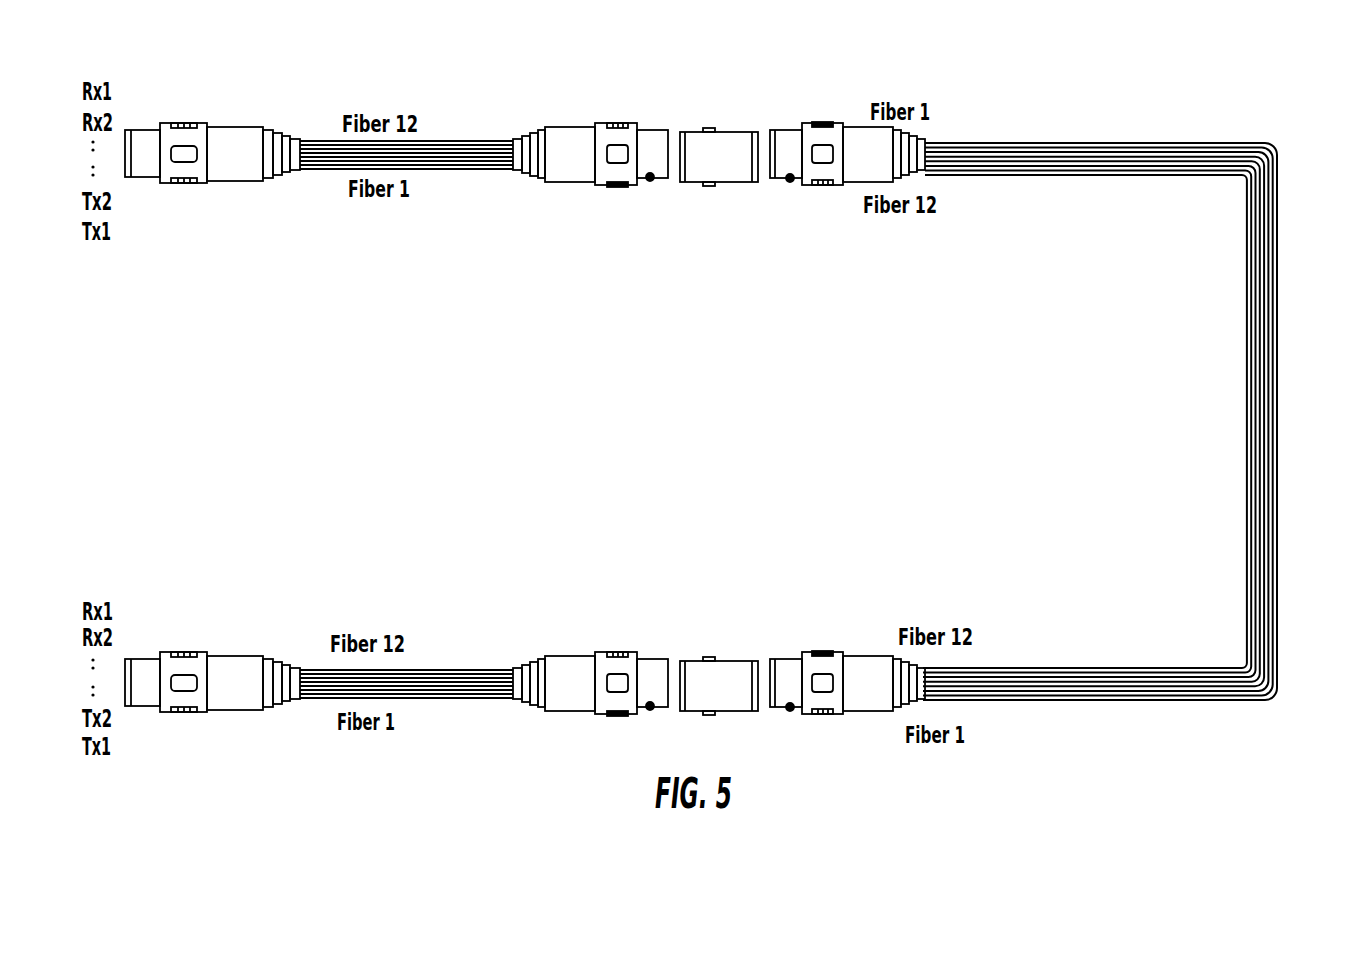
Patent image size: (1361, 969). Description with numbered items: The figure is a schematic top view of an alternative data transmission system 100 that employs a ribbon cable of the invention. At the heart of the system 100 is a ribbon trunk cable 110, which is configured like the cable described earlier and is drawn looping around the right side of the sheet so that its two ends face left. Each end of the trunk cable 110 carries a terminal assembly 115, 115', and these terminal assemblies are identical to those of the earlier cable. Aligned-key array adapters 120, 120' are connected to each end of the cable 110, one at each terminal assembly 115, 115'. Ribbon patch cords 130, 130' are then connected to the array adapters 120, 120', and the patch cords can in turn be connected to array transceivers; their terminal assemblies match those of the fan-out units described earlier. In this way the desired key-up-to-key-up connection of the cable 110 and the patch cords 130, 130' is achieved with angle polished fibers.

The system 100 is at (942, 120).
The ribbon trunk cable 110 is at (1278, 414).
The terminal assembly 115 is at (847, 102).
The terminal assembly 115' is at (849, 636).
The aligned-key array adapter 120 is at (719, 124).
The aligned-key array adapter 120' is at (726, 647).
The ribbon patch cord 130 is at (406, 113).
The ribbon patch cord 130' is at (417, 650).